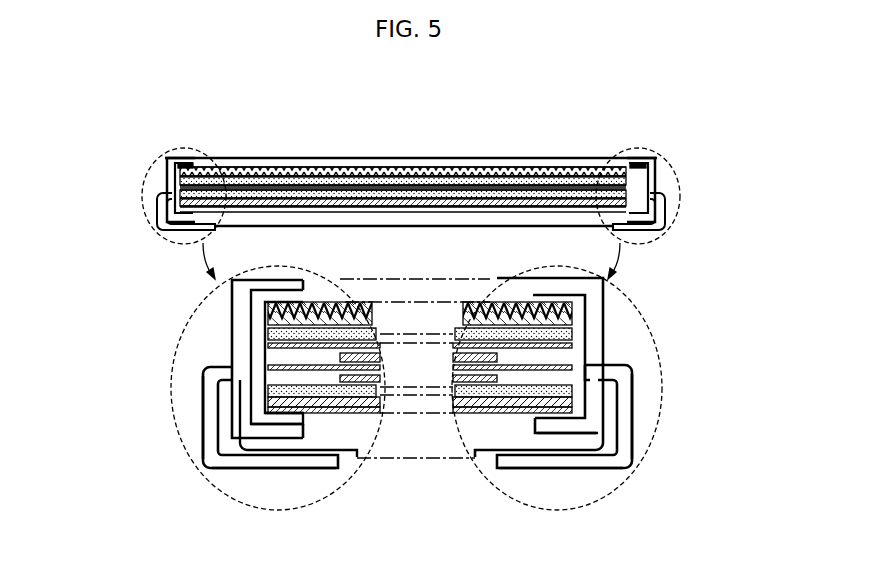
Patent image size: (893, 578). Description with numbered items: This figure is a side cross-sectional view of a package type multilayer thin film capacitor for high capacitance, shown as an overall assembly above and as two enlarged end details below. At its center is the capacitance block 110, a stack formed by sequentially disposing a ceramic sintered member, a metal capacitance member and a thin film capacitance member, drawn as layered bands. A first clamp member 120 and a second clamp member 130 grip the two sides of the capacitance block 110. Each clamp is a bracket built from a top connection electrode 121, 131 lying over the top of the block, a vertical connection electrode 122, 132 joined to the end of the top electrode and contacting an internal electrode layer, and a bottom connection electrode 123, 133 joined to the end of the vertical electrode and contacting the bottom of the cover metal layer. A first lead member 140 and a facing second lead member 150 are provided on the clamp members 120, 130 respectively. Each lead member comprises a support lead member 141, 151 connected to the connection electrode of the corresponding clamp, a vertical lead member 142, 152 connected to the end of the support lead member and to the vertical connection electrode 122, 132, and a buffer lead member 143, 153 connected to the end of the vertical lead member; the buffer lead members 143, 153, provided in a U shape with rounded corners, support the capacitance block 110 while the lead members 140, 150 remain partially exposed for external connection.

The capacitance block 110 is at (412, 140).
The first clamp member 120 is at (737, 286).
The top connection electrode 121 is at (558, 301).
The vertical connection electrode 122 is at (572, 338).
The bottom connection electrode 123 is at (552, 412).
The second clamp member 130 is at (92, 284).
The top connection electrode 131 is at (158, 172).
The vertical connection electrode 132 is at (188, 163).
The bottom connection electrode 133 is at (280, 418).
The first lead member 140 is at (313, 158).
The support lead member 141 is at (570, 427).
The vertical lead member 142 is at (592, 402).
The buffer lead member 143 is at (600, 462).
The second lead member 150 is at (100, 428).
The support lead member 151 is at (212, 428).
The vertical lead member 152 is at (240, 400).
The buffer lead member 153 is at (277, 462).